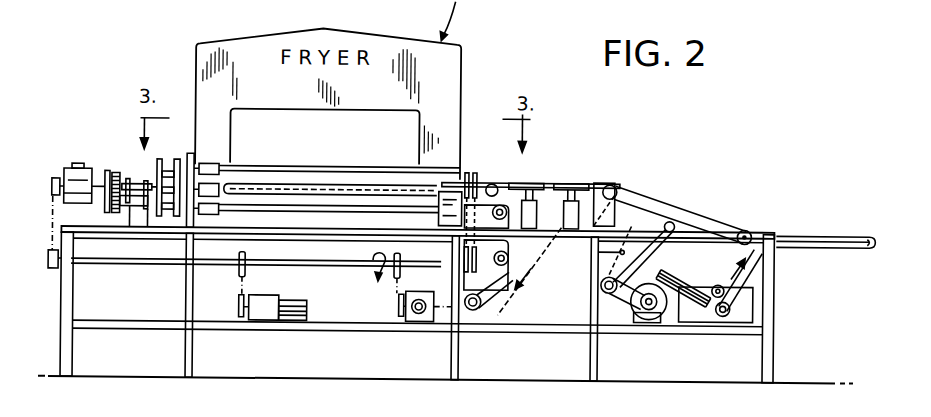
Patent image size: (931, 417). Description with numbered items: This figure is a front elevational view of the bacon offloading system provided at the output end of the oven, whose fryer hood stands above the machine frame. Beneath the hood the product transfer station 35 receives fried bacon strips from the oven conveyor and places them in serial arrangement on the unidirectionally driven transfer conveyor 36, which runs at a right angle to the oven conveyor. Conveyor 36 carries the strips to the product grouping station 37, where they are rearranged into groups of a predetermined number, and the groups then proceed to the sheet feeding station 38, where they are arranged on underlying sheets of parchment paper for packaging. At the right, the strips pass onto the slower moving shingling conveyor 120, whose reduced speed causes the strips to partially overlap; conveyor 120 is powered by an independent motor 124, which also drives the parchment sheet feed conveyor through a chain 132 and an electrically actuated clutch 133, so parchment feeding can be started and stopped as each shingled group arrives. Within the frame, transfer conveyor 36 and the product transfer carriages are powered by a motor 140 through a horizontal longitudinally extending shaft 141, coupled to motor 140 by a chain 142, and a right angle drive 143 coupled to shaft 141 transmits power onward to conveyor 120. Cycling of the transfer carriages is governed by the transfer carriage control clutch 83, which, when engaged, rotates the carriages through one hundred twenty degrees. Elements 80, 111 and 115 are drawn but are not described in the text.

The product transfer station 35 is at (179, 138).
The transfer conveyor 36 is at (473, 152).
The product grouping station 37 is at (549, 166).
The sheet feeding station 38 is at (783, 214).
The frame 80 is at (75, 247).
The transfer carriage control clutch 83 is at (79, 165).
The lever arm 111 is at (658, 186).
The cam drive 115 is at (668, 314).
The shingling conveyor 120 is at (822, 222).
The motor 124 is at (688, 277).
The chain 132 is at (64, 268).
The electrically actuated clutch 133 is at (498, 290).
The motor 140 is at (297, 306).
The horizontal longitudinally extending shaft 141 is at (303, 263).
The chain 142 is at (232, 294).
The right angle drive 143 is at (420, 320).